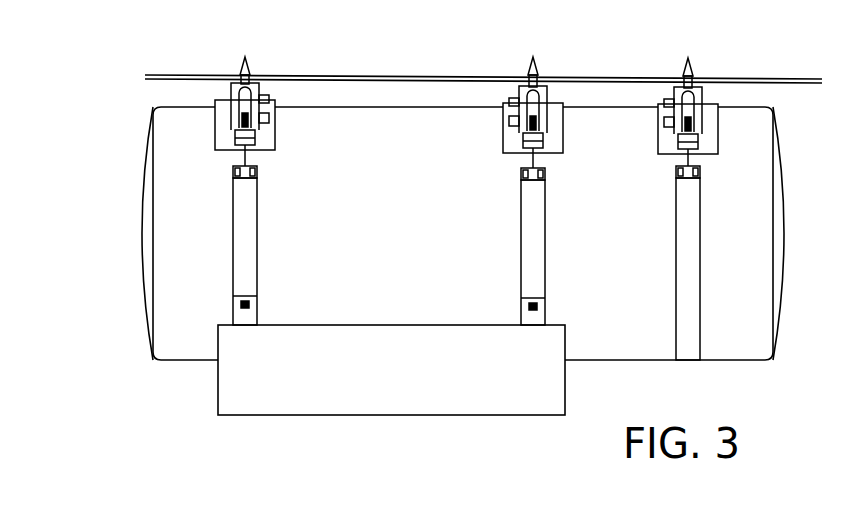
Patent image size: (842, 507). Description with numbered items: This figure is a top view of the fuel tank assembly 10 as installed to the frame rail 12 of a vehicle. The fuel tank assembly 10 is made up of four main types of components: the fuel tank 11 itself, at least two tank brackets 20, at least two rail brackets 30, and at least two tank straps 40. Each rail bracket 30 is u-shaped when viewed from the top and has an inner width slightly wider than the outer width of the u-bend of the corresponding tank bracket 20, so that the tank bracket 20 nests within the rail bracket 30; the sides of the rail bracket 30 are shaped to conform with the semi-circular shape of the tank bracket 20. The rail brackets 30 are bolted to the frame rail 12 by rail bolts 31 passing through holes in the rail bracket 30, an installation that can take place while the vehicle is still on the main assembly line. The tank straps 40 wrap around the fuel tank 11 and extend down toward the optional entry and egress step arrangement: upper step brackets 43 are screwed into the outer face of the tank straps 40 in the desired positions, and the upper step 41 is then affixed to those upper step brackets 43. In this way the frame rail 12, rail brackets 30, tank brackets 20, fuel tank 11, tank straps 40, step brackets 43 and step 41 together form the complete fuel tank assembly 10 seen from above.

The fuel tank assembly 10 is at (76, 298).
The fuel tank 11 is at (182, 238).
The frame rail 12 is at (176, 72).
The tank bracket 20 is at (283, 129).
The rail bracket 30 is at (229, 88).
The rail bolt 31 is at (248, 61).
The tank strap 40 is at (248, 237).
The upper step 41 is at (367, 390).
The upper step bracket 43 is at (252, 315).